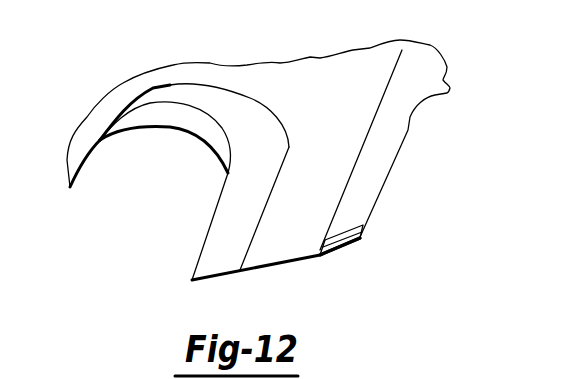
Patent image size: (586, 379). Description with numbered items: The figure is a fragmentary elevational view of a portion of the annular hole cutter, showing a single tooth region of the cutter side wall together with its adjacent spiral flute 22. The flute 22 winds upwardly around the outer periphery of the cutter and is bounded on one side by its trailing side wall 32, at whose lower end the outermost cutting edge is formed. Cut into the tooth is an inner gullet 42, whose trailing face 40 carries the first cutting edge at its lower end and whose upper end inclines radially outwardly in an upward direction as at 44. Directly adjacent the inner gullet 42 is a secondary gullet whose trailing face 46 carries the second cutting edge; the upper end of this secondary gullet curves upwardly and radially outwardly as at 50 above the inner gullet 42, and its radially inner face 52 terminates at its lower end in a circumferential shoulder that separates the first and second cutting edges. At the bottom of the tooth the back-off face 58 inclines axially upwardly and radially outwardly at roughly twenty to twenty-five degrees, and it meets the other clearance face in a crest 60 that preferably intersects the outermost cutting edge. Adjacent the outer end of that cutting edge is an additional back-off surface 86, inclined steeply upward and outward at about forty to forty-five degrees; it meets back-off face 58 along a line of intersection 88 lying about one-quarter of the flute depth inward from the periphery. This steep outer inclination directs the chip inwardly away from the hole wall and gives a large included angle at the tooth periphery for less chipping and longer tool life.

The spiral flute 22 is at (333, 80).
The trailing side wall 32 is at (353, 167).
The trailing face 40 is at (199, 257).
The inner gullet 42 is at (113, 180).
The inclined upper end 44 is at (163, 120).
The trailing face 46 is at (262, 213).
The curved upper end 50 is at (250, 117).
The radially inner face 52 is at (227, 233).
The back-off face 58 is at (335, 253).
The crest 60 is at (347, 247).
The additional back-off surface 86 is at (347, 227).
The line of intersection 88 is at (358, 242).